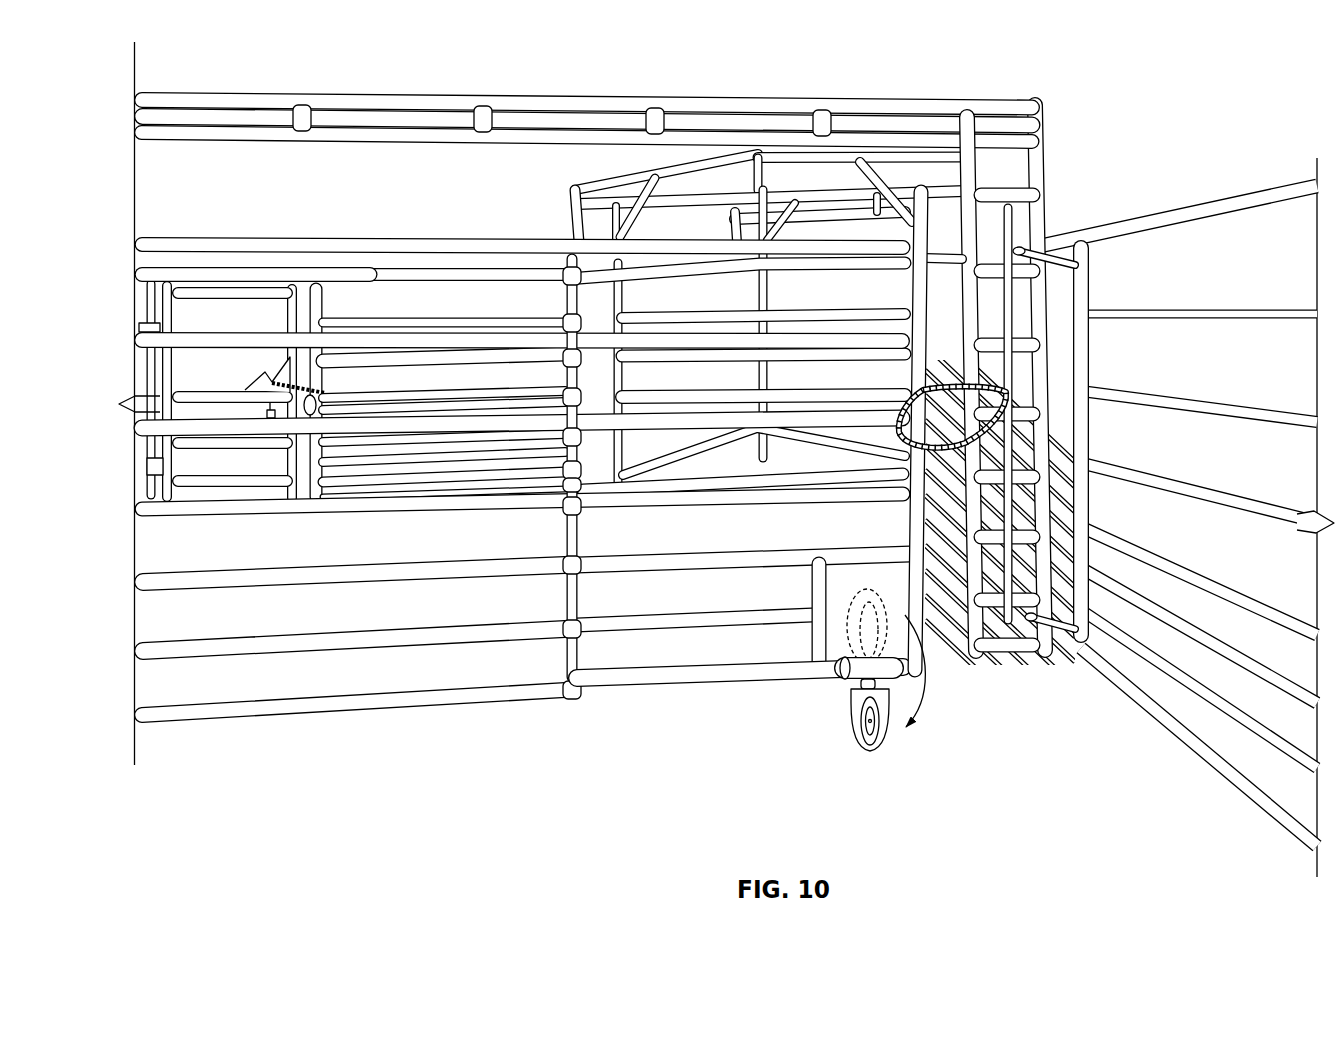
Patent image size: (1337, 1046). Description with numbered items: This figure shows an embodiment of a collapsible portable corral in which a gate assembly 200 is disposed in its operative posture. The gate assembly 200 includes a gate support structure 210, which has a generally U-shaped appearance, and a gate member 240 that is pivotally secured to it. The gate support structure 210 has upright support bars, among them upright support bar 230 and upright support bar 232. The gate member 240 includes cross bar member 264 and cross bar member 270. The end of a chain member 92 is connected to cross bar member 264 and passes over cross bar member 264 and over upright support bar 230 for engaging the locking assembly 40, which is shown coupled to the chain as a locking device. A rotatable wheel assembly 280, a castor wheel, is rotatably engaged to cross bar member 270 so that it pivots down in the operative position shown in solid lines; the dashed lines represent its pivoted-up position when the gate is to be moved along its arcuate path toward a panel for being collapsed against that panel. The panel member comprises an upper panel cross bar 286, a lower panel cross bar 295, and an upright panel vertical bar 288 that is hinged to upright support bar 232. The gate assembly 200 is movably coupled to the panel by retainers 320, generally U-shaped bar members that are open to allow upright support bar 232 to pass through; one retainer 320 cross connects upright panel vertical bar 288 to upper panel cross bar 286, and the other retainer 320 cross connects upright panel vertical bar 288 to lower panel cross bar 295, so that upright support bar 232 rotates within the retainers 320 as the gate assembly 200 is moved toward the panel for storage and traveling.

The gate assembly 200 is at (515, 83).
The gate support structure 210 is at (690, 83).
The upright support bar 230 is at (978, 170).
The upright support bar 232 is at (1040, 176).
The retainer 320 is at (1052, 252).
The upper panel cross bar 286 is at (1217, 204).
The upright panel vertical bar 288 is at (1086, 366).
The locking assembly 40 is at (1000, 393).
The chain member 92 is at (915, 462).
The cross bar member 264 is at (717, 424).
The gate member 240 is at (538, 716).
The cross bar member 270 is at (732, 686).
The rotatable wheel assembly 280 is at (869, 750).
The lower panel cross bar 295 is at (1165, 718).